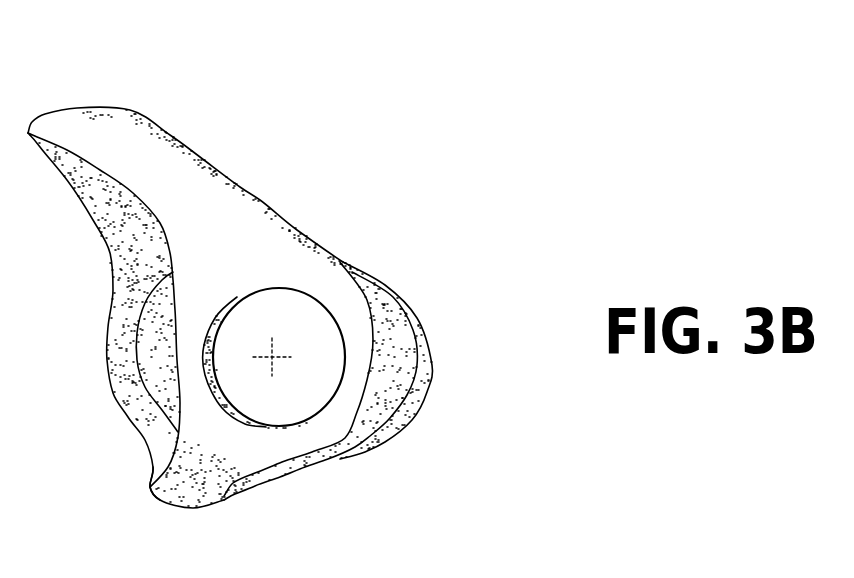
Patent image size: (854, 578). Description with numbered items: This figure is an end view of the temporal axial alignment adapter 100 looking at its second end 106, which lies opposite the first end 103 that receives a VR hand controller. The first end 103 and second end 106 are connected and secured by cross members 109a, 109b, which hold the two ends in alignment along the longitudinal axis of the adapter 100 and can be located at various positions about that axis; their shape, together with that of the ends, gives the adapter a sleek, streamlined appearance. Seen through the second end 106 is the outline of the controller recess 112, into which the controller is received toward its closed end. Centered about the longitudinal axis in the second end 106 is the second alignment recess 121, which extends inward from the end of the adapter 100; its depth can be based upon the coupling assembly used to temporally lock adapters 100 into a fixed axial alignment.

The temporal axial alignment adapter 100 is at (279, 87).
The first end 103 is at (442, 372).
The second end 106 is at (316, 218).
The cross member 109a is at (128, 110).
The cross member 109b is at (147, 488).
The controller recess 112 is at (383, 348).
The second alignment recess 121 is at (333, 392).